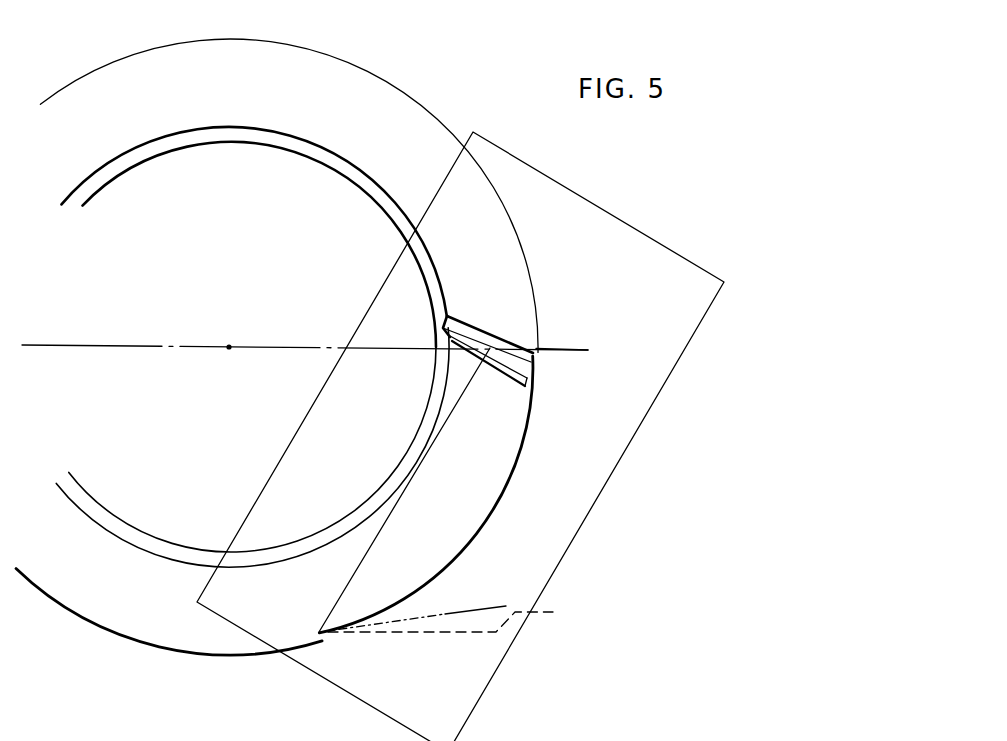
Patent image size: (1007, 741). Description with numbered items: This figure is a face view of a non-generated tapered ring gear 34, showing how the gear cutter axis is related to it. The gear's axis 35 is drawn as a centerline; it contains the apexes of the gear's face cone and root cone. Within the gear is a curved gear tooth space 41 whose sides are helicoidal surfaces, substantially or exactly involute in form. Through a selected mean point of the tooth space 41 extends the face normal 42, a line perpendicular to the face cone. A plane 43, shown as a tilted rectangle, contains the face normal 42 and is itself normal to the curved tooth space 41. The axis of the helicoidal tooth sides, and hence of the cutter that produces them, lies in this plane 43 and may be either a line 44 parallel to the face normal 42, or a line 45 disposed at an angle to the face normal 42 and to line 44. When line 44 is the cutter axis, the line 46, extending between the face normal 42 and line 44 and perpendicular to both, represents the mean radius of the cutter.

The tapered ring gear 34 is at (433, 127).
The axis 35 is at (229, 347).
The gear tooth space 41 is at (507, 343).
The face normal 42 is at (563, 350).
The plane 43 is at (591, 483).
The line 44 is at (454, 615).
The line 45 is at (465, 603).
The line 46 is at (386, 517).